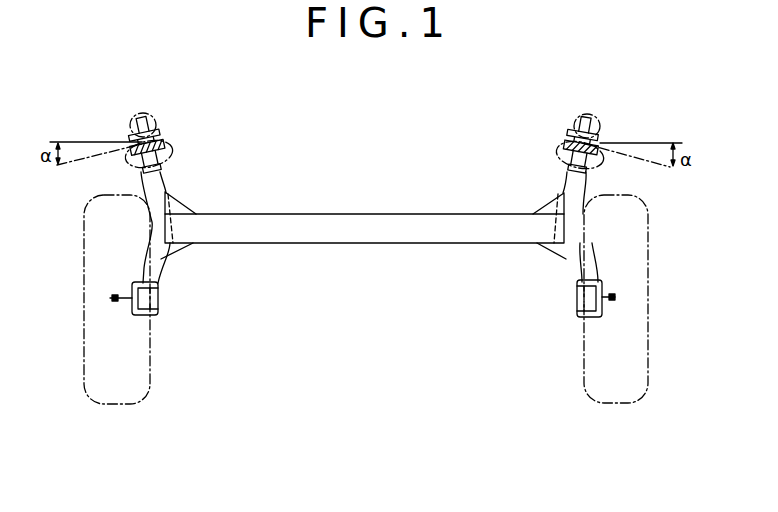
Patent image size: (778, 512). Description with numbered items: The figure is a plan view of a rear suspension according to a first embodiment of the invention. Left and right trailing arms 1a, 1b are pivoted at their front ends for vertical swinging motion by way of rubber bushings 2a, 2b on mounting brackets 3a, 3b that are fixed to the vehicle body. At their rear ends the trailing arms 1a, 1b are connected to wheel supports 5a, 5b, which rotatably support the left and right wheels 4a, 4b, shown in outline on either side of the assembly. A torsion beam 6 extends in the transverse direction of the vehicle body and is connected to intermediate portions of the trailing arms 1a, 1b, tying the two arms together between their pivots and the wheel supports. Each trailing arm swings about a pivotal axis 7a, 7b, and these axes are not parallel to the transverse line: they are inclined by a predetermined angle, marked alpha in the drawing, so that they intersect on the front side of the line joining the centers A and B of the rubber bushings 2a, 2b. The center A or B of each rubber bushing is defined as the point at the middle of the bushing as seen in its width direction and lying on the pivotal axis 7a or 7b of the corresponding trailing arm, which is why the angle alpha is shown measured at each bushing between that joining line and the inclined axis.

The left trailing arm 1a is at (168, 178).
The right trailing arm 1b is at (561, 177).
The rubber bushing 2a is at (116, 120).
The rubber bushing 2b is at (615, 123).
The mounting bracket 3a is at (143, 110).
The mounting bracket 3b is at (577, 116).
The left wheel 4a is at (103, 405).
The right wheel 4b is at (625, 403).
The wheel support 5a is at (132, 316).
The wheel support 5b is at (605, 314).
The torsion beam 6 is at (327, 213).
The pivotal axis 7a is at (176, 132).
The pivotal axis 7b is at (552, 146).
The center of rubber bushing A is at (132, 104).
The center of rubber bushing B is at (596, 100).